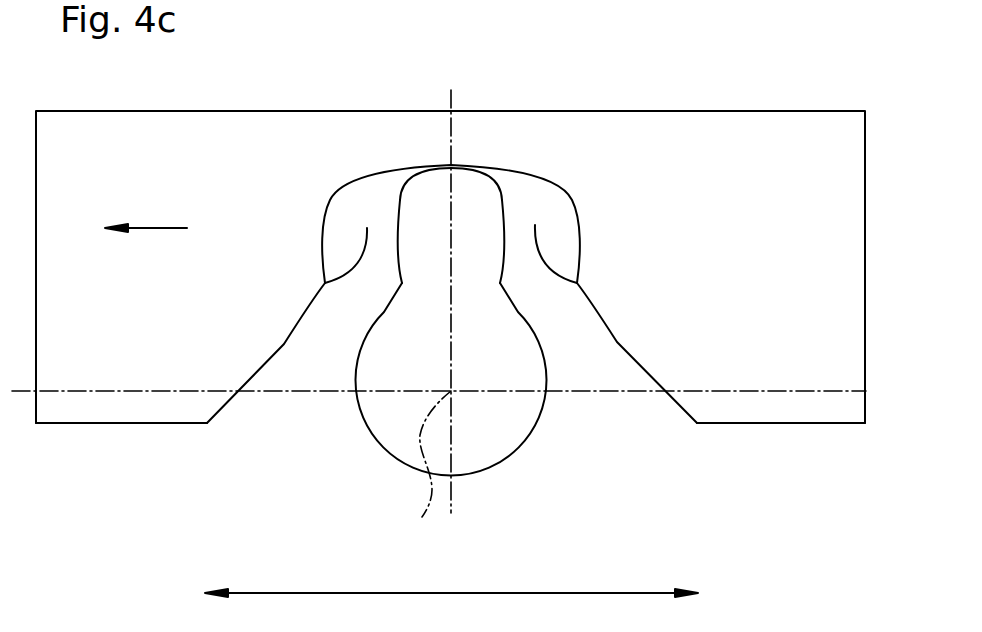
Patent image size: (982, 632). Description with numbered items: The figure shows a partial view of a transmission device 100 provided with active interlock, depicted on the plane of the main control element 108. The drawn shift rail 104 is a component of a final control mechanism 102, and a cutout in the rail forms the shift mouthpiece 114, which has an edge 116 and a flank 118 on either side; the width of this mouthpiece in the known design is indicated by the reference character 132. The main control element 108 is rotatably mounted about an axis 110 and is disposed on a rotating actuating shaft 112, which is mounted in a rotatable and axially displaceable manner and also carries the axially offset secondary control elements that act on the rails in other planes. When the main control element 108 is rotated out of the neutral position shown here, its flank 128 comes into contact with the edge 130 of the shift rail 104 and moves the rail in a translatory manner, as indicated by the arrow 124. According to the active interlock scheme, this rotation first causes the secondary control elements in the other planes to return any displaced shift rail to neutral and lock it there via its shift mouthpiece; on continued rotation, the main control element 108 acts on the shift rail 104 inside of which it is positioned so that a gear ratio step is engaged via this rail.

The transmission device 100 is at (745, 510).
The final control mechanism 102 is at (807, 403).
The shift rail 104 is at (695, 132).
The main control element 108 is at (470, 185).
The axis 110 is at (428, 472).
The actuating shaft 112 is at (392, 443).
The shift mouthpiece 114 is at (597, 350).
The edge 116 is at (367, 228).
The flank 118 is at (223, 403).
The arrow 124 is at (157, 230).
The flank 128 is at (404, 212).
The edge 130 is at (322, 282).
The shift mouthpiece width 132 is at (505, 592).